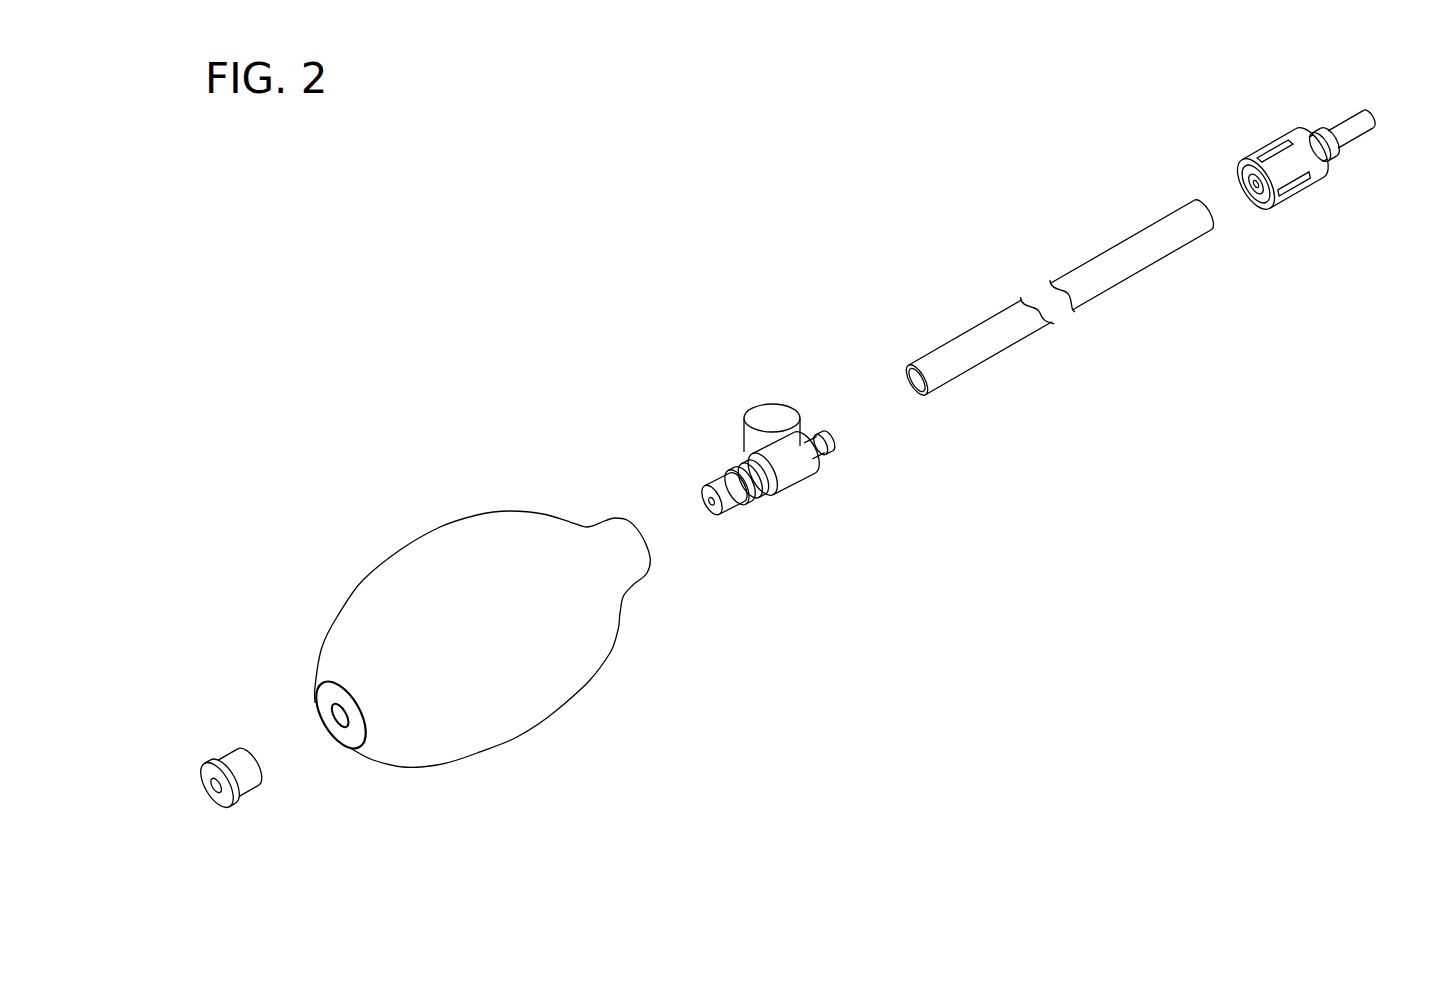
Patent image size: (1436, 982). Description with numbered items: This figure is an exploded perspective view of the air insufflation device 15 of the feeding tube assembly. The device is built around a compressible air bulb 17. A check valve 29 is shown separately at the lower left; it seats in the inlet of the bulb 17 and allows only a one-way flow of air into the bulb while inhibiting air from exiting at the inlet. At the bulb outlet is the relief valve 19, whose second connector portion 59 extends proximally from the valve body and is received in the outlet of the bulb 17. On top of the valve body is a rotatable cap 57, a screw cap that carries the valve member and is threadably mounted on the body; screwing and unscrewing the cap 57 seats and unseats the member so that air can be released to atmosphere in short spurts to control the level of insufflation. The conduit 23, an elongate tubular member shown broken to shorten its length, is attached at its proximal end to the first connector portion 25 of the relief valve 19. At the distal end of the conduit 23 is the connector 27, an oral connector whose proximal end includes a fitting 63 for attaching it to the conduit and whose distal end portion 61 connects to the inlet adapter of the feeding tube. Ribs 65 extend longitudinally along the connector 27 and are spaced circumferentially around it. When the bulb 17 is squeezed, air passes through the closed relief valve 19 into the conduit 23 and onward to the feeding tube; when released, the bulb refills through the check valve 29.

The air insufflation device 15 is at (421, 193).
The compressible air bulb 17 is at (440, 728).
The relief valve 19 is at (823, 501).
The conduit 23 is at (1115, 275).
The first connector portion 25 is at (822, 424).
The connector 27 is at (1314, 207).
The check valve 29 is at (222, 760).
The rotatable cap 57 is at (768, 418).
The second connector portion 59 is at (730, 505).
The distal end portion 61 is at (1355, 133).
The fitting 63 is at (1240, 192).
The ribs 65 is at (1275, 152).